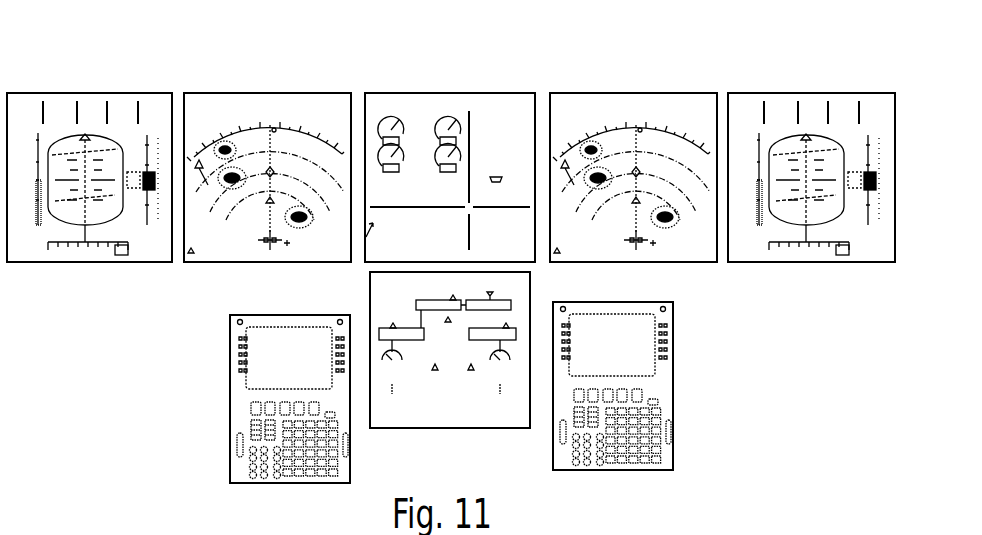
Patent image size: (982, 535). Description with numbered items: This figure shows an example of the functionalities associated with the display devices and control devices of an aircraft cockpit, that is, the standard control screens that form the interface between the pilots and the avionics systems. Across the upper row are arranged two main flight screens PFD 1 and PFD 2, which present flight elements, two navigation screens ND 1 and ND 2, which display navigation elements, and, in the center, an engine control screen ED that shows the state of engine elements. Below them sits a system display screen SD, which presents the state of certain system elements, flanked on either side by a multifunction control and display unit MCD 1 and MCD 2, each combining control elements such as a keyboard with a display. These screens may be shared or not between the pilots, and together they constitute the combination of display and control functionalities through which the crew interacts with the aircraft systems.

The main flight screen PFD 1 is at (89, 137).
The navigation screen ND 1 is at (267, 137).
The engine control screen ED is at (450, 137).
The navigation screen ND 2 is at (633, 137).
The main flight screen PFD 2 is at (811, 137).
The multifunction control and display unit MCD 1 is at (213, 399).
The multifunction control and display unit MCD 2 is at (697, 386).
The system display screen SD is at (450, 387).